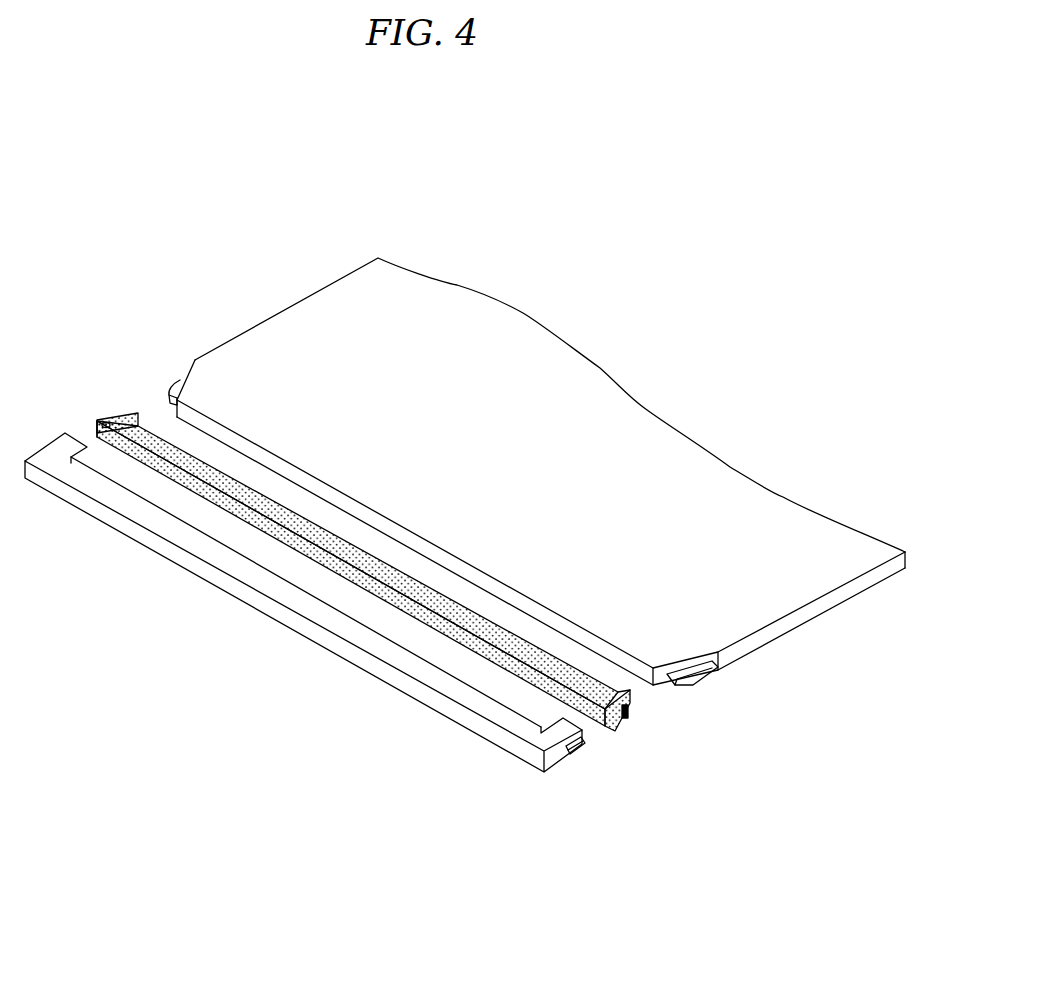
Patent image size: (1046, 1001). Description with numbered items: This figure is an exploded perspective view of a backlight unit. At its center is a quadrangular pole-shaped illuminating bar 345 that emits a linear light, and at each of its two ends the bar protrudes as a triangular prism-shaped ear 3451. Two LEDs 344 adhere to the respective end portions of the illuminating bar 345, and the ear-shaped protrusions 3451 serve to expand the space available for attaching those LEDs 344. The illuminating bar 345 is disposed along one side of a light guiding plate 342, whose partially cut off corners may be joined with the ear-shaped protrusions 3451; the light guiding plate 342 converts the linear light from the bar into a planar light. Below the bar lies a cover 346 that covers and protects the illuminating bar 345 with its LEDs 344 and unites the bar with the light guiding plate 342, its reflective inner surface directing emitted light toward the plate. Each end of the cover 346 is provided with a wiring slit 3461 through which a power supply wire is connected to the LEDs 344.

The light guiding plate 342 is at (747, 625).
The LED 344 is at (115, 421).
The illuminating bar 345 is at (602, 722).
The ear-shaped protrusion 3451 is at (136, 412).
The cover 346 is at (276, 612).
The wiring slit 3461 is at (574, 756).